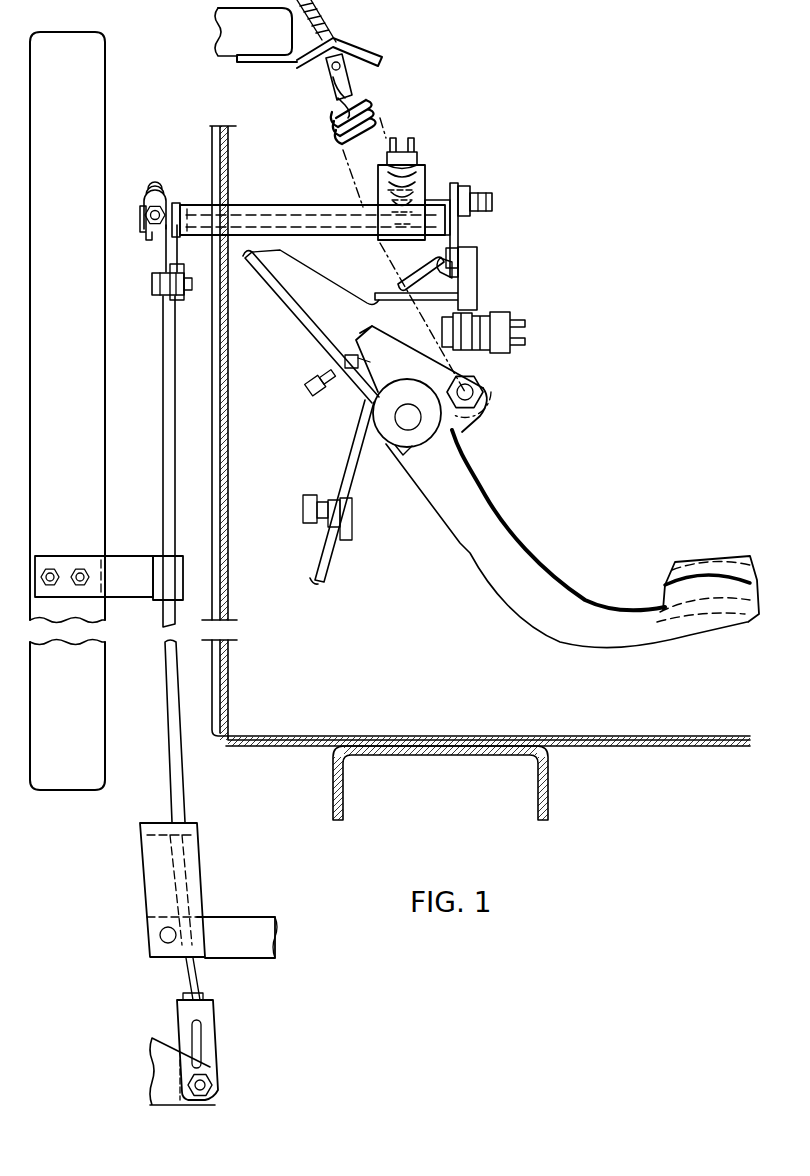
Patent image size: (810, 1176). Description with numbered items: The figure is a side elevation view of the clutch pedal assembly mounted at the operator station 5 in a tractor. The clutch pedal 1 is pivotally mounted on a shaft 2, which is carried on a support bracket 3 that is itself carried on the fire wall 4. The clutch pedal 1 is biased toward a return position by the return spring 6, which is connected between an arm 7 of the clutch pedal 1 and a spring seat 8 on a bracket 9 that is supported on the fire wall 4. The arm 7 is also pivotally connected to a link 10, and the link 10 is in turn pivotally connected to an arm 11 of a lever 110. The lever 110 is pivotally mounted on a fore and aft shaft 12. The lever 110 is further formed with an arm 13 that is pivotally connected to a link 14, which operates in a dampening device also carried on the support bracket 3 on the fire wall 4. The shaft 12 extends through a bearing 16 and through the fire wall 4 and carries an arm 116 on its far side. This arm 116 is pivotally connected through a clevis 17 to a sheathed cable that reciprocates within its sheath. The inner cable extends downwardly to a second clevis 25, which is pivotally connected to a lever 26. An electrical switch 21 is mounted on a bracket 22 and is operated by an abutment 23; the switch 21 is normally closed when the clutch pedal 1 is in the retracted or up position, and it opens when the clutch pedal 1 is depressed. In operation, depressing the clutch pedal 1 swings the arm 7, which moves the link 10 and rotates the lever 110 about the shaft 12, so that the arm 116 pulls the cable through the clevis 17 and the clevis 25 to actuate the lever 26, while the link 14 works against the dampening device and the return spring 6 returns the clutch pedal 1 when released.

The clutch pedal 1 is at (488, 520).
The shaft 2 is at (407, 420).
The support bracket 3 is at (338, 293).
The fire wall 4 is at (237, 437).
The operator station 5 is at (645, 410).
The return spring 6 is at (372, 115).
The arm 7 is at (467, 418).
The spring seat 8 is at (323, 68).
The bracket 9 is at (384, 50).
The link 10 is at (468, 292).
The arm 11 is at (456, 181).
The fore and aft shaft 12 is at (262, 212).
The arm 13 is at (462, 273).
The link 14 is at (455, 252).
The bearing 16 is at (322, 212).
The clevis 17 is at (175, 293).
The electrical switch 21 is at (419, 138).
The bracket 22 is at (378, 172).
The abutment 23 is at (418, 280).
The clevis 25 is at (212, 1032).
The lever 26 is at (168, 1068).
The lever 110 is at (463, 178).
The arm 116 is at (167, 242).